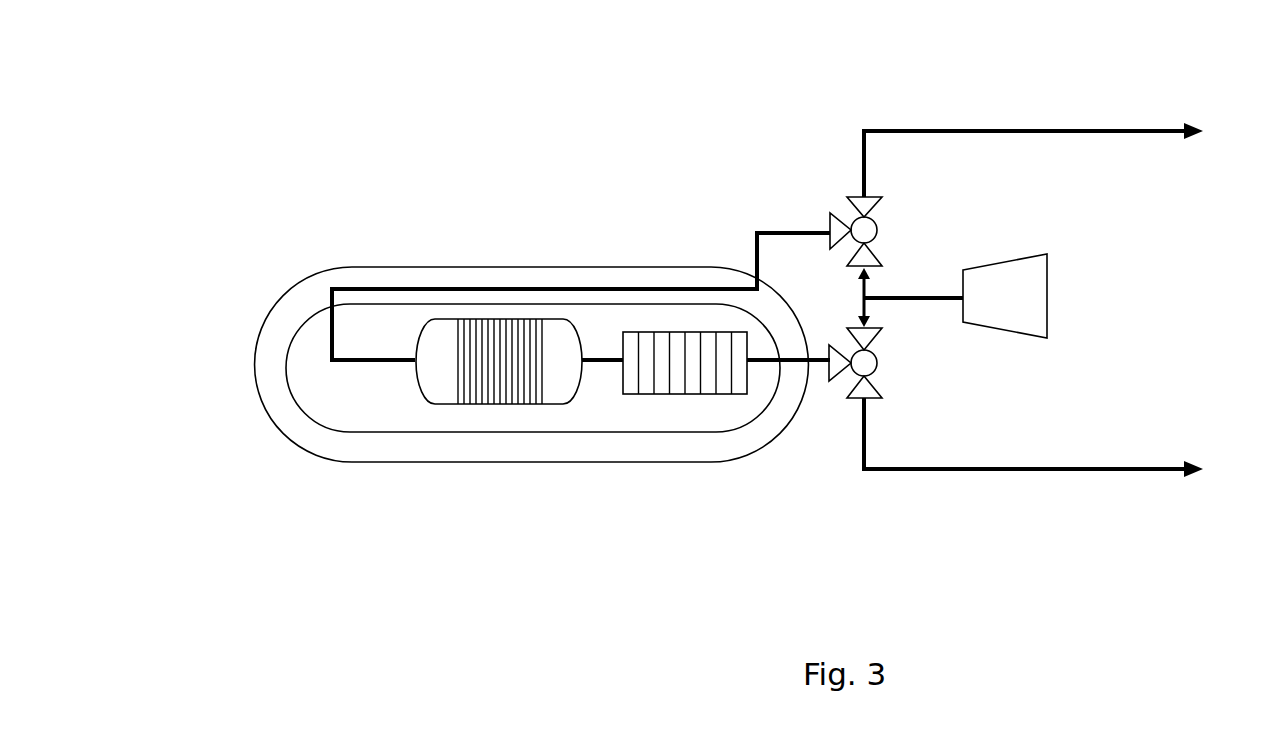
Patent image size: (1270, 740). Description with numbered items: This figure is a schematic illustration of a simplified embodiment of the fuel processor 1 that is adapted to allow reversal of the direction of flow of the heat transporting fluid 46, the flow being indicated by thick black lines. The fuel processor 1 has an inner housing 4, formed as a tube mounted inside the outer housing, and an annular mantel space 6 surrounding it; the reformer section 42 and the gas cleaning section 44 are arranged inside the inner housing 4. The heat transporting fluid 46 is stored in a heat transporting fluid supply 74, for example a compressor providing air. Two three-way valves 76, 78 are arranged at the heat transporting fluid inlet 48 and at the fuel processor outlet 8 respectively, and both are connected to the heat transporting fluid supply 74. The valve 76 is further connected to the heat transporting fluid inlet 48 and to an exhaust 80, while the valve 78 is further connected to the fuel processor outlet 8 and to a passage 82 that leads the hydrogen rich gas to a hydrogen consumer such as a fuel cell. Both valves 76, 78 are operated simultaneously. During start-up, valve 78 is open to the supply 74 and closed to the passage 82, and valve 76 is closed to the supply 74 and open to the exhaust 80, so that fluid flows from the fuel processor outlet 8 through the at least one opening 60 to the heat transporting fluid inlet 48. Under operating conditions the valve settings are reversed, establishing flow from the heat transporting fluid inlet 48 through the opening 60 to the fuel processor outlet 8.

The fuel processor 1 is at (554, 205).
The inner housing 4 is at (389, 404).
The mantel space 6 is at (542, 450).
The fuel processor outlet 8 is at (824, 368).
The reformer section 42 is at (577, 255).
The gas cleaning section 44 is at (597, 249).
The heat transporting fluid 46 is at (1005, 296).
The heat transporting fluid inlet 48 is at (757, 264).
The opening 60 is at (331, 306).
The heat transporting fluid supply 74 is at (1003, 317).
The 3-way valve 76 is at (860, 197).
The 3-way valve 78 is at (863, 387).
The exhaust 80 is at (1057, 157).
The passage 82 is at (1057, 442).